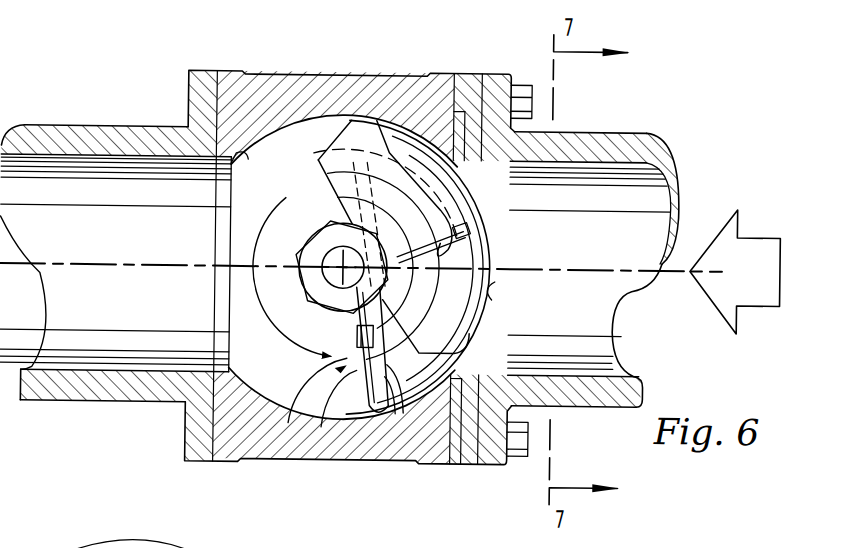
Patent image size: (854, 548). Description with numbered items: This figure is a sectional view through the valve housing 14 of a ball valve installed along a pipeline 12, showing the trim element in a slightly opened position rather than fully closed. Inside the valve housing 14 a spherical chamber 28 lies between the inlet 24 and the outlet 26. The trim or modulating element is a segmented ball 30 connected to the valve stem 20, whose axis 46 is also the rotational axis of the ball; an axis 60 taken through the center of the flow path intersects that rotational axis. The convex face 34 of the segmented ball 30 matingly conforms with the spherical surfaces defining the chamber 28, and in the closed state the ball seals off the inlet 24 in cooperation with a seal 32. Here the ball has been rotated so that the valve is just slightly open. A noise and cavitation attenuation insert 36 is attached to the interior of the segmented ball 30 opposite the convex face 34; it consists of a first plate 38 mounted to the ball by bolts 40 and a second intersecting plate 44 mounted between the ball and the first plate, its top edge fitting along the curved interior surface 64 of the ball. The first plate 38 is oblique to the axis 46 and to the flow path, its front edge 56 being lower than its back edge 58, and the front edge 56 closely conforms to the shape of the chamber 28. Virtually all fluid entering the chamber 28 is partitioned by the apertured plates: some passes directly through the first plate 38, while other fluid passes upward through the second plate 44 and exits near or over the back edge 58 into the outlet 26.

The pipeline 12 is at (114, 104).
The valve housing 14 is at (305, 58).
The valve stem 20 is at (318, 288).
The inlet 24 is at (536, 178).
The outlet 26 is at (235, 147).
The spherical chamber 28 is at (338, 150).
The segmented ball 30 is at (419, 372).
The seal 32 is at (441, 402).
The convex face 34 is at (470, 402).
The noise and cavitation attenuation insert 36 is at (334, 428).
The first plate 38 is at (356, 428).
The bolts 40 is at (295, 428).
The second plate 44 is at (475, 258).
The axis 46 is at (322, 264).
The front edge 56 is at (364, 402).
The back edge 58 is at (345, 150).
The axis 60 is at (584, 265).
The curved interior surface 64 is at (504, 284).